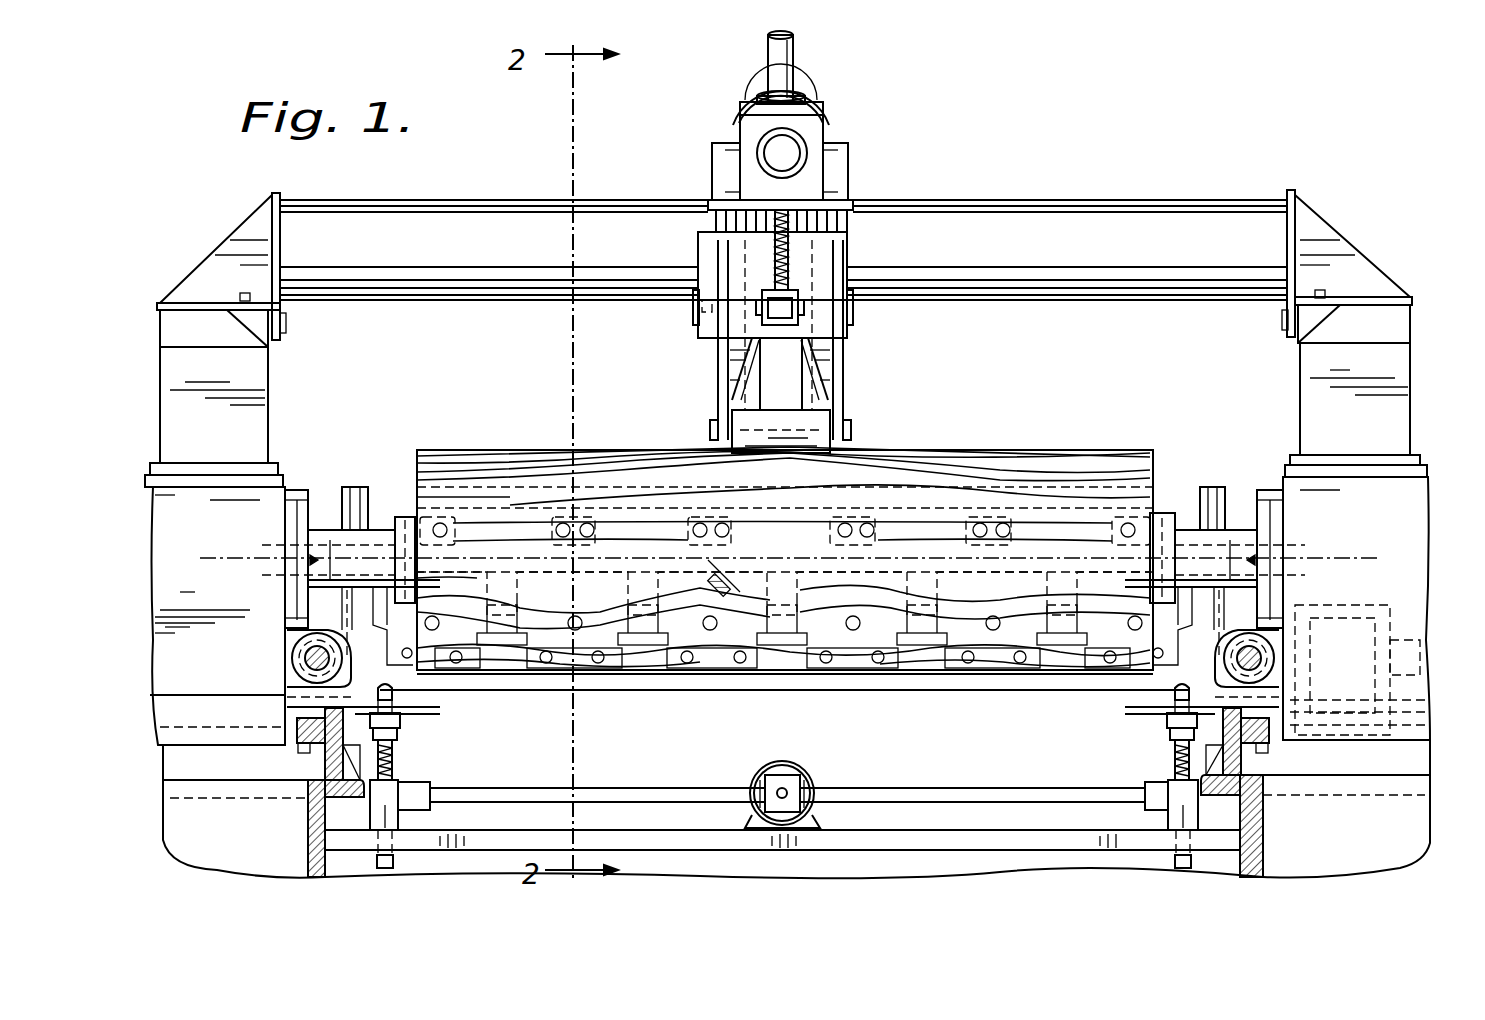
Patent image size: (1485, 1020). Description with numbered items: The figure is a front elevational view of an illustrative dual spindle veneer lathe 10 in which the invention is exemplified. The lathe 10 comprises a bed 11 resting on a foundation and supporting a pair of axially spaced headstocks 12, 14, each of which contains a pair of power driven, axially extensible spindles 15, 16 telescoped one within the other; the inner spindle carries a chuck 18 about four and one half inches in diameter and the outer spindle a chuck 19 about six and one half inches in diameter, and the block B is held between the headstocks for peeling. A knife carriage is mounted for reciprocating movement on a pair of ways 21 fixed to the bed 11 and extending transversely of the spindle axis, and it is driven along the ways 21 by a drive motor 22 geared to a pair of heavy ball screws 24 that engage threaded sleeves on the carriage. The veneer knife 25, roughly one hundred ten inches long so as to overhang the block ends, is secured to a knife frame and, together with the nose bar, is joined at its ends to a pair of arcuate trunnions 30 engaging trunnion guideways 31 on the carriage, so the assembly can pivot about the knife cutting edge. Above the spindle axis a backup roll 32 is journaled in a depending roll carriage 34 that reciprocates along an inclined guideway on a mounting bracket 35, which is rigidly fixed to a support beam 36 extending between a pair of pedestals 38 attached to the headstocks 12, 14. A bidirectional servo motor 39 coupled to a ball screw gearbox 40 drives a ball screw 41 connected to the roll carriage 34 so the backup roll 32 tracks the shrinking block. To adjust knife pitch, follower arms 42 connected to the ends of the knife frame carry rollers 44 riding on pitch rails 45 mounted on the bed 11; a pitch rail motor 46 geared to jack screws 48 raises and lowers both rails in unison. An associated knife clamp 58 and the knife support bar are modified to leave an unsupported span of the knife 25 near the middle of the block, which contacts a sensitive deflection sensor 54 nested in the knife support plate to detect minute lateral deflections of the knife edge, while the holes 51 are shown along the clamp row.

The veneer lathe 10 is at (1118, 154).
The bed 11 is at (1377, 843).
The headstock 12 is at (262, 478).
The headstock 14 is at (1293, 475).
The spindle 15 is at (318, 528).
The spindle 16 is at (283, 548).
The chuck 18 is at (318, 566).
The chuck 19 is at (406, 515).
The ways 21 is at (332, 738).
The drive motor 22 is at (1345, 608).
The ball screws 24 is at (306, 660).
The veneer knife 25 is at (514, 562).
The arcuate trunnions 30 is at (305, 630).
The trunnion guideways 31 is at (325, 700).
The backup roll 32 is at (800, 435).
The roll carriage 34 is at (847, 356).
The mounting bracket 35 is at (838, 162).
The support beam 36 is at (955, 200).
The pedestals 38 is at (268, 390).
The servo motor 39 is at (798, 50).
The ball screw gearbox 40 is at (830, 108).
The ball screw 41 is at (790, 245).
The follower arms 42 is at (395, 700).
The roller 44 is at (400, 718).
The pitch rails 45 is at (397, 734).
The pitch rail motor 46 is at (766, 770).
The jack screws 48 is at (392, 860).
The cutter holes 51 is at (560, 668).
The deflection sensor 54 is at (722, 580).
The knife clamp 58 is at (700, 672).
The log B is at (655, 447).